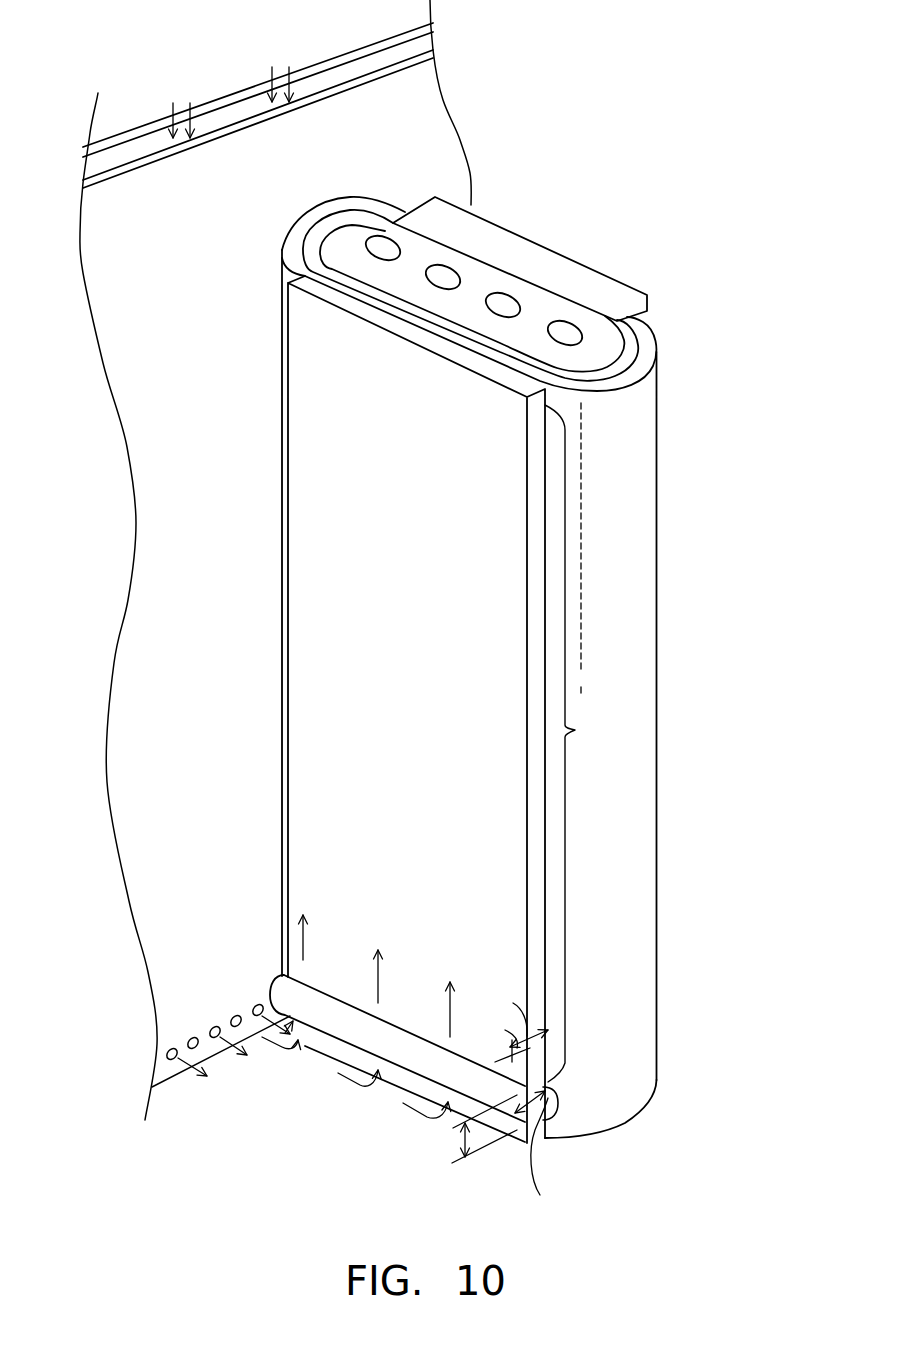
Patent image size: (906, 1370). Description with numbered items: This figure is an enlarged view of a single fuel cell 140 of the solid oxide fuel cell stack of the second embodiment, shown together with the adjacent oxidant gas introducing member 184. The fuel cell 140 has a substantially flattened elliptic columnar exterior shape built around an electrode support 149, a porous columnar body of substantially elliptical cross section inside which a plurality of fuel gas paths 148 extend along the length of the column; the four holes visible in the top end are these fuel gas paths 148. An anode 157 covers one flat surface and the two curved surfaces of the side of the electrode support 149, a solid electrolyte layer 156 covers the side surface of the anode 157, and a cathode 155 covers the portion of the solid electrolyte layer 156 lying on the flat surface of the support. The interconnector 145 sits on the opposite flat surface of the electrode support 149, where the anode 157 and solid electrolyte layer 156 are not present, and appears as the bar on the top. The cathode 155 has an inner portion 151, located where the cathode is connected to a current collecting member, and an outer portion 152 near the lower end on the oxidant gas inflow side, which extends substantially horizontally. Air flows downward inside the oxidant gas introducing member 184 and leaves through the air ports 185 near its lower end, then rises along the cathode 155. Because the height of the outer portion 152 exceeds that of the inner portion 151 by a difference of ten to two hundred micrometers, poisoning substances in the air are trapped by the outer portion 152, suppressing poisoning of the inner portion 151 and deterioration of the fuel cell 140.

The fuel cell 140 is at (540, 206).
The interconnector 145 is at (545, 258).
The fuel gas paths 148 is at (567, 330).
The electrode support 149 is at (600, 343).
The inner portion 151 is at (575, 730).
The outer portion 152 is at (562, 1106).
The cathode 155 is at (545, 383).
The solid electrolyte layer 156 is at (643, 358).
The anode 157 is at (643, 344).
The oxidant gas introducing member 184 is at (413, 125).
The air ports 185 is at (191, 1042).